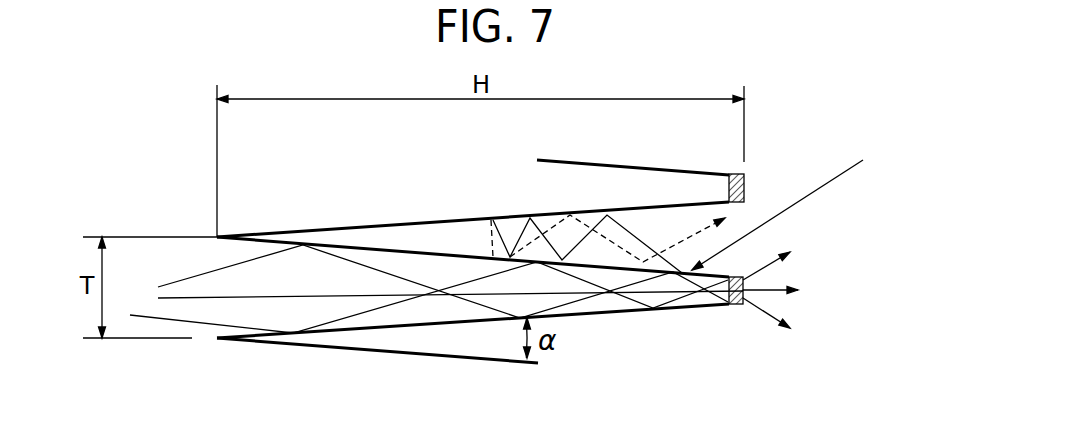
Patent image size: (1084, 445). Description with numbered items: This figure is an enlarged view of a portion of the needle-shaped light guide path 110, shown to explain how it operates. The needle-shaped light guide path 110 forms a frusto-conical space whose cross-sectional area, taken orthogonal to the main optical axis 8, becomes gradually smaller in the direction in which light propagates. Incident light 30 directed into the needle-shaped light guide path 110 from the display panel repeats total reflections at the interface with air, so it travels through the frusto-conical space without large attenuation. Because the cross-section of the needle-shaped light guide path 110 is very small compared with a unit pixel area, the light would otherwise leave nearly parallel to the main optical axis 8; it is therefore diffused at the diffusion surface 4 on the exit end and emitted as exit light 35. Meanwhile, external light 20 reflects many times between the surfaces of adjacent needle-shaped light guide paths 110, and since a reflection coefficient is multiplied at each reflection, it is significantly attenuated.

The needle-shaped light guide path 110 is at (590, 166).
The diffusion surface 4 is at (746, 185).
The incident light 30 is at (208, 326).
The exit light 35 is at (800, 290).
The main optical axis 8 is at (284, 297).
The external light 20 is at (839, 172).